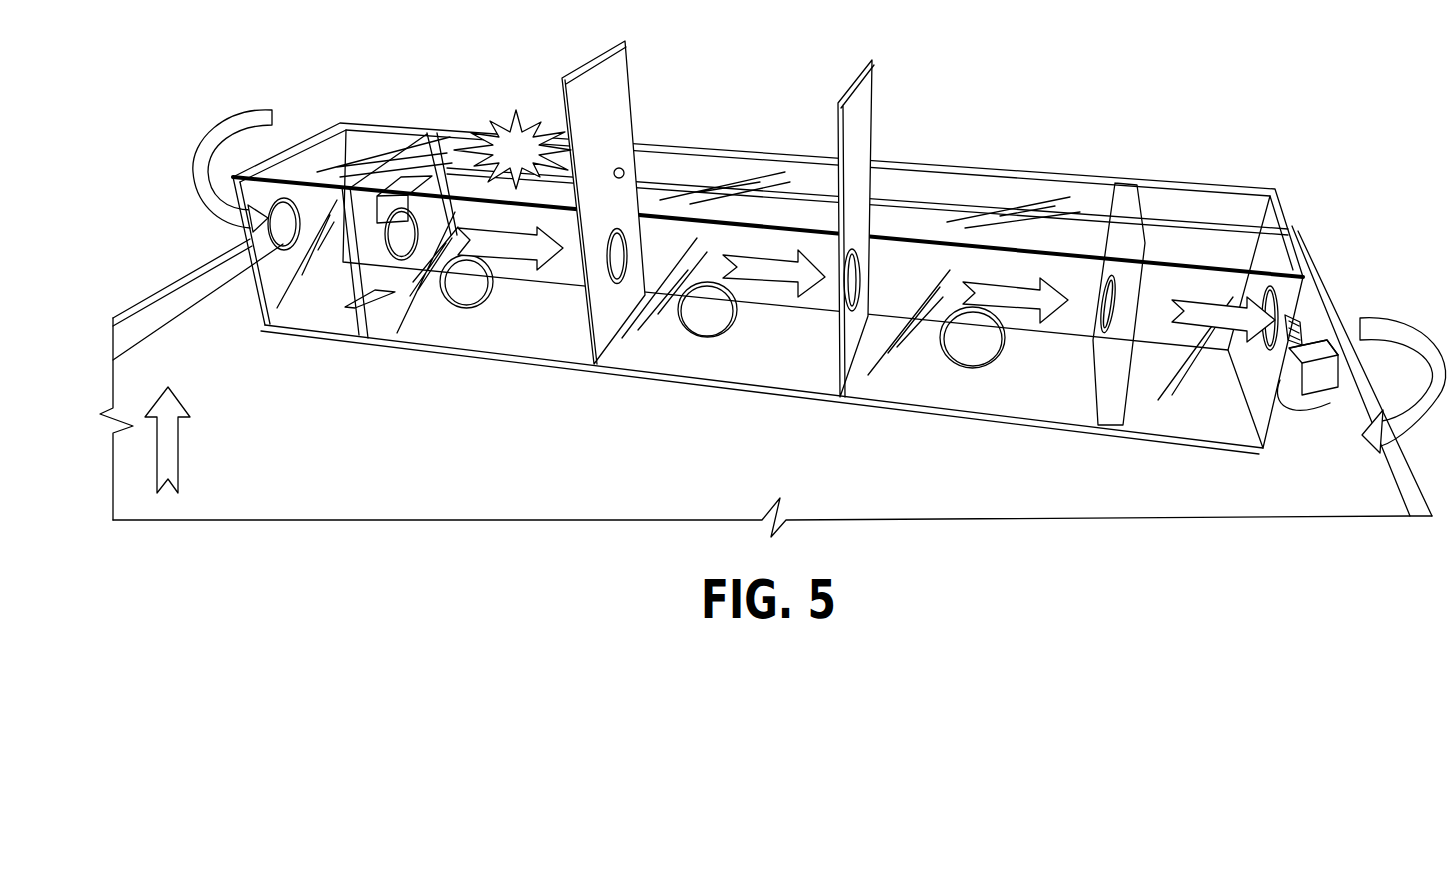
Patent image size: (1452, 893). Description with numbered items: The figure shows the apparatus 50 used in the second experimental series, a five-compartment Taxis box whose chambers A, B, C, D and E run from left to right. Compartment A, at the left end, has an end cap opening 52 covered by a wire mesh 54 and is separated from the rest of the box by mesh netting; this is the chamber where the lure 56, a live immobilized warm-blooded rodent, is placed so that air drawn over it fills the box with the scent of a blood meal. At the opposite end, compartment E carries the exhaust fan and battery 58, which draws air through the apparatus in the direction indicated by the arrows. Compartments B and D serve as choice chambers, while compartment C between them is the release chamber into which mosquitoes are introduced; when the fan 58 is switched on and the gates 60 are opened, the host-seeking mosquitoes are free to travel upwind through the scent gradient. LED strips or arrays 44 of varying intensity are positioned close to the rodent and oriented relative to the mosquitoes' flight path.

The LED strips/arrays 44 is at (508, 150).
The apparatus 50 is at (1093, 147).
The end cap opening 52 is at (244, 263).
The wire mesh 54 is at (291, 250).
The lure 56 is at (378, 303).
The exhaust fan and battery 58 is at (1318, 390).
The gates 60 is at (596, 84).